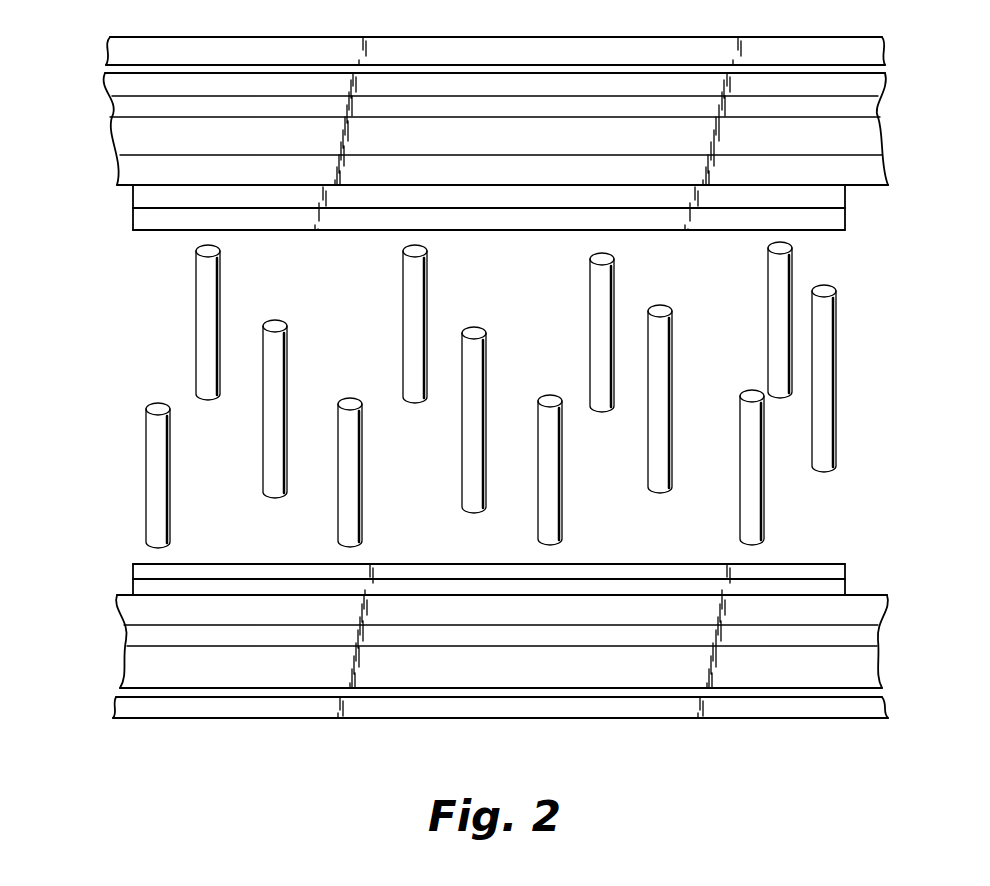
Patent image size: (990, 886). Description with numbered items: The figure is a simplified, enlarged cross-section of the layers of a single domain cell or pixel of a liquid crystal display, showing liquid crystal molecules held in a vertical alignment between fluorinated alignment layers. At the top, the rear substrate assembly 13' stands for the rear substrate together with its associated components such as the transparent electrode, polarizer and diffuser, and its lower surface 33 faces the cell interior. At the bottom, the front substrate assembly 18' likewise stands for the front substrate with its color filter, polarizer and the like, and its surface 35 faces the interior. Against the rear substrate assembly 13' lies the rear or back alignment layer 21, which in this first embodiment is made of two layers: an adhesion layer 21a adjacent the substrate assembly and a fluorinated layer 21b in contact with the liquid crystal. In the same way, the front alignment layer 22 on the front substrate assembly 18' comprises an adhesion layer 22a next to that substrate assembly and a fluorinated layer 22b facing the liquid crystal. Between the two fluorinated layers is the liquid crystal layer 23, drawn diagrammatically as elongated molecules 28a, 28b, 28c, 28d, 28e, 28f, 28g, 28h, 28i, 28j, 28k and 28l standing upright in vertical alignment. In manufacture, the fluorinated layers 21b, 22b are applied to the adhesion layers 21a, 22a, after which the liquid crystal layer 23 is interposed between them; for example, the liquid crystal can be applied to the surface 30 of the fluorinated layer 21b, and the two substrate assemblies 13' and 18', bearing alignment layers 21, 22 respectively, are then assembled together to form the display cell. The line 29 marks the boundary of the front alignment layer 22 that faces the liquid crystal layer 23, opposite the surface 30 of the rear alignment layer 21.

The substrate assembly 13' is at (543, 125).
The lower surface 33 is at (882, 188).
The rear alignment layer 21 is at (493, 221).
The adhesion layer 21a is at (847, 206).
The fluorinated layer 21b is at (838, 231).
The surface 30 is at (514, 231).
The liquid crystal layer 23 is at (116, 557).
The liquid crystal molecule 28a is at (162, 480).
The liquid crystal molecule 28b is at (360, 488).
The liquid crystal molecule 28c is at (555, 492).
The liquid crystal molecule 28d is at (763, 507).
The liquid crystal molecule 28e is at (278, 340).
The liquid crystal molecule 28f is at (480, 358).
The liquid crystal molecule 28g is at (668, 463).
The liquid crystal molecule 28h is at (838, 345).
The liquid crystal molecule 28i is at (200, 320).
The liquid crystal molecule 28j is at (406, 345).
The liquid crystal molecule 28k is at (596, 355).
The spacer rod 28l is at (770, 273).
The front alignment layer 22 is at (491, 548).
The adhesion layer 22a is at (846, 574).
The fluorinated layer 22b is at (825, 562).
The upper surface of lower cover layer 29 is at (429, 562).
The lower surface 35 is at (523, 580).
The substrate assembly 18' is at (549, 642).